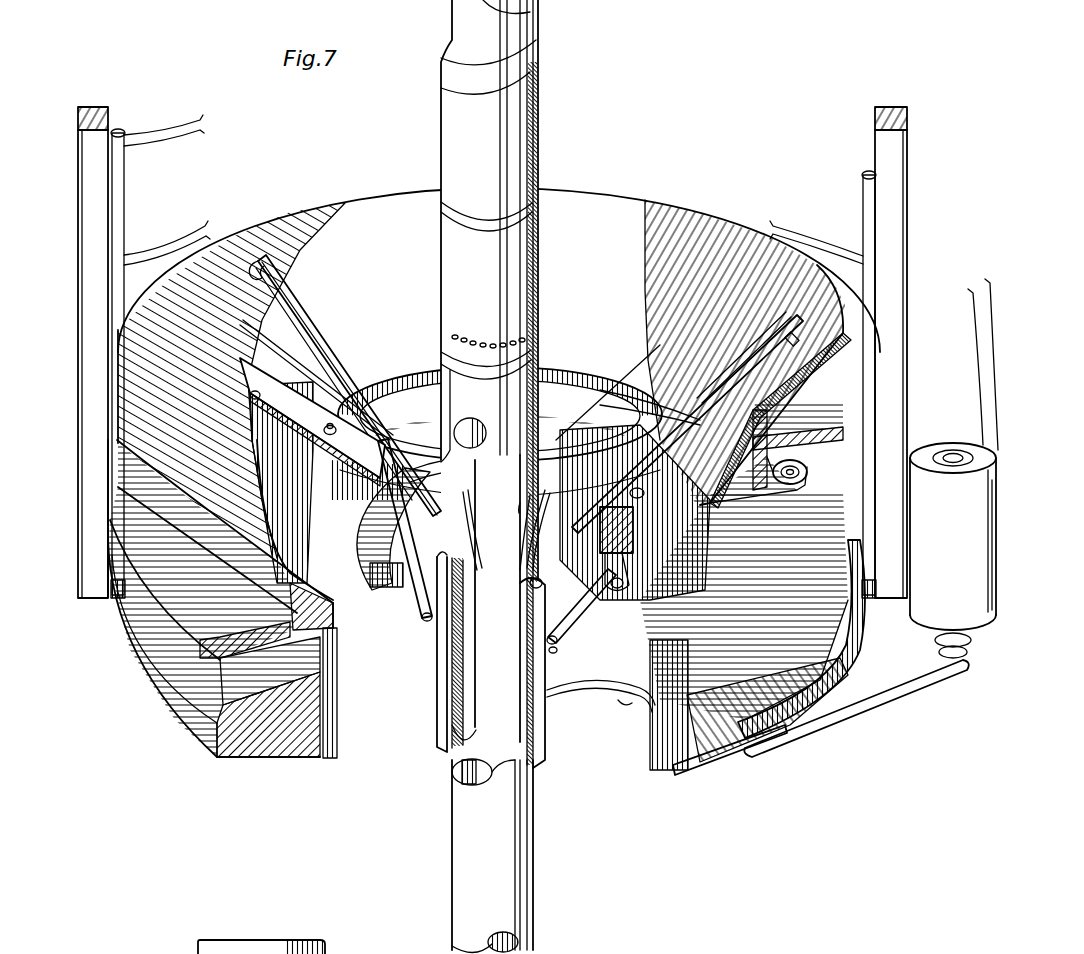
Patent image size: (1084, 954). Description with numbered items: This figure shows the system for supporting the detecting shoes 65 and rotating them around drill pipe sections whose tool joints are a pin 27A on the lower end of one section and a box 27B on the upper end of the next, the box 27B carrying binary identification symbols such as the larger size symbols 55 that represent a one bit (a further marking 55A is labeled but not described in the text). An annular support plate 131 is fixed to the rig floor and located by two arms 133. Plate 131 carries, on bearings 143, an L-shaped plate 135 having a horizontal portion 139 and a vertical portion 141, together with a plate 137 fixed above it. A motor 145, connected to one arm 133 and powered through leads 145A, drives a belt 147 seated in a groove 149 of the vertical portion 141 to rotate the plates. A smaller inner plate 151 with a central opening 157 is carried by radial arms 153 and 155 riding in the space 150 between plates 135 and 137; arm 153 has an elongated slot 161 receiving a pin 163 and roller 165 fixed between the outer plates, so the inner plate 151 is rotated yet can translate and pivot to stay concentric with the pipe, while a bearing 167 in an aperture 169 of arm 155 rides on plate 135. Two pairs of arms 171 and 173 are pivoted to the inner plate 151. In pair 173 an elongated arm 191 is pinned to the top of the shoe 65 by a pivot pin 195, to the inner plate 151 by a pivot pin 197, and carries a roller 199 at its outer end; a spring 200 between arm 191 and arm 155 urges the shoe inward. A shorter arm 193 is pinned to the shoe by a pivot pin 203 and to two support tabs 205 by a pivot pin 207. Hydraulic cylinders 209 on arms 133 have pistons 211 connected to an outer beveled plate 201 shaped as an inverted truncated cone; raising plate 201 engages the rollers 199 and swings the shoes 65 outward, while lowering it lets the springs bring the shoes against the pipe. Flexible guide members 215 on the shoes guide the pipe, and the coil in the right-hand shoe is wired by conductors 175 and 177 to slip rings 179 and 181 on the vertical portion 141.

The arms 133 is at (108, 118).
The hydraulic cylinders 209 is at (126, 222).
The pistons 211 is at (125, 292).
The arm 153 is at (257, 360).
The elongated slot 161 is at (293, 410).
The pin 163 is at (332, 424).
The roller 165 is at (397, 405).
The pin 27A is at (537, 74).
The box 27B is at (540, 240).
The outer beveled plate 201 is at (690, 226).
The elongated arm 191 is at (700, 325).
The central opening 157 is at (553, 440).
The roller 199 is at (812, 318).
The flexible guide members 215 is at (520, 500).
The pivot pin 197 is at (677, 385).
The pivot pin 195 is at (637, 420).
The bearing 167 is at (788, 462).
The aperture 169 is at (806, 478).
The arm 155 is at (868, 550).
The pivot pin 207 is at (660, 515).
The spring 200 is at (744, 560).
The support tabs 205 is at (577, 562).
The shorter arm 193 is at (577, 607).
The pair of arms 173 is at (563, 640).
The pivot pin 203 is at (555, 648).
The pair of arms 171 is at (403, 593).
The inner plate 151 is at (340, 625).
The space 150 is at (333, 630).
The plate 137 is at (120, 635).
The plate 135 is at (180, 670).
The annular support plate 131 is at (177, 717).
The horizontal portion 139 is at (250, 725).
The bearings 143 is at (300, 722).
The vertical portion 141 is at (337, 742).
The groove 149 is at (313, 755).
The detecting shoe 65 is at (438, 768).
The conductor 175 is at (593, 712).
The conductor 177 is at (620, 710).
The slip ring 179 is at (675, 722).
The slip ring 181 is at (730, 772).
The belt 147 is at (880, 698).
The motor 145 is at (957, 622).
The leads 145A is at (975, 318).
The larger size symbol 55 is at (706, 953).
The cylinder 55A is at (768, 953).